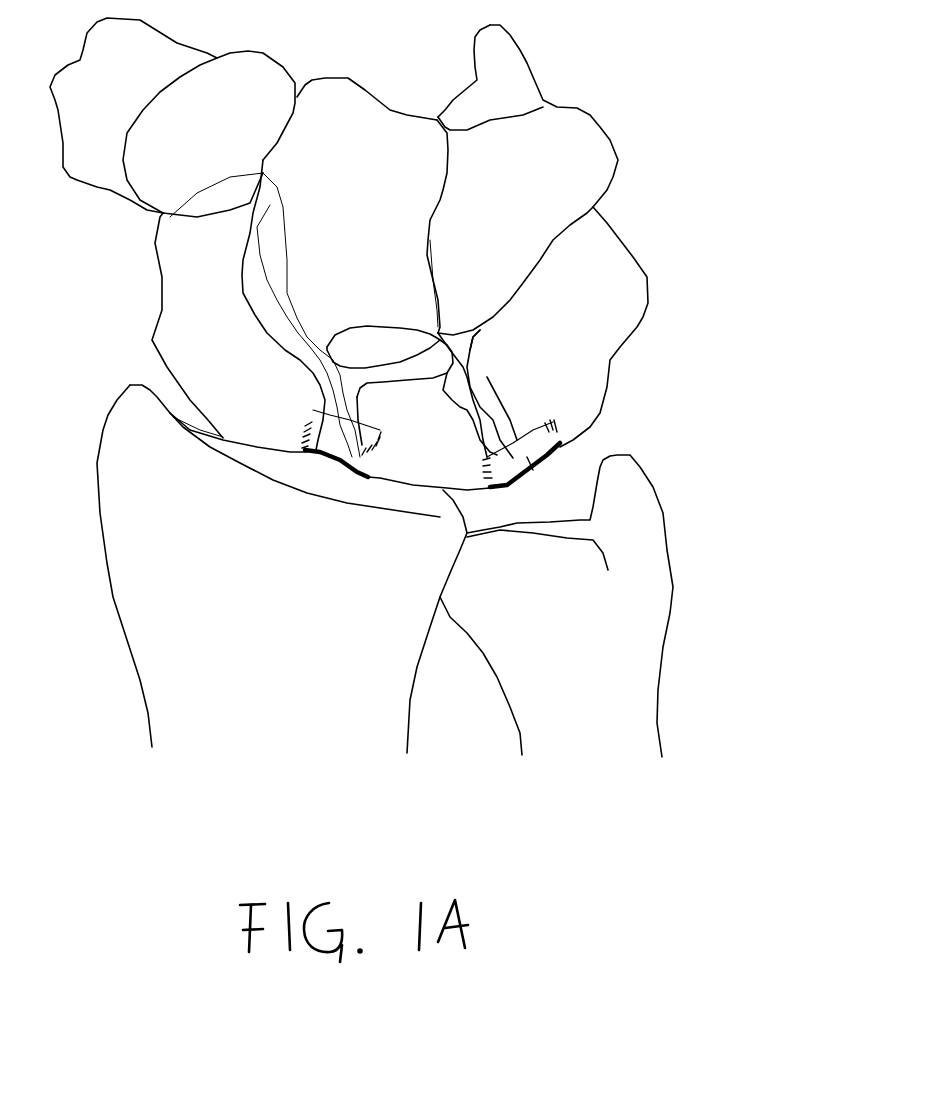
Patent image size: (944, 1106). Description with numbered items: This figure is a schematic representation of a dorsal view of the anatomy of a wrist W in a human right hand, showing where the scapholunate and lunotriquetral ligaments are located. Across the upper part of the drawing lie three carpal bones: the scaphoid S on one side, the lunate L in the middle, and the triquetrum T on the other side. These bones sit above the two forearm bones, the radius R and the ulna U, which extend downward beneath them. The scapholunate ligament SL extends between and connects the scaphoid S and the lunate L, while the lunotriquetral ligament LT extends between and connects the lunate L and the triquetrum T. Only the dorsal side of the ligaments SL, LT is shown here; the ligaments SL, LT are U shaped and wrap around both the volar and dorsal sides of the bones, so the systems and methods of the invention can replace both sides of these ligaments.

The wrist W is at (807, 119).
The scaphoid S is at (256, 308).
The triquetrum T is at (559, 327).
The lunate L is at (420, 395).
The lunotriquetral ligament LT is at (613, 450).
The scapholunate ligament SL is at (332, 500).
The radius R is at (293, 569).
The ulna U is at (556, 606).